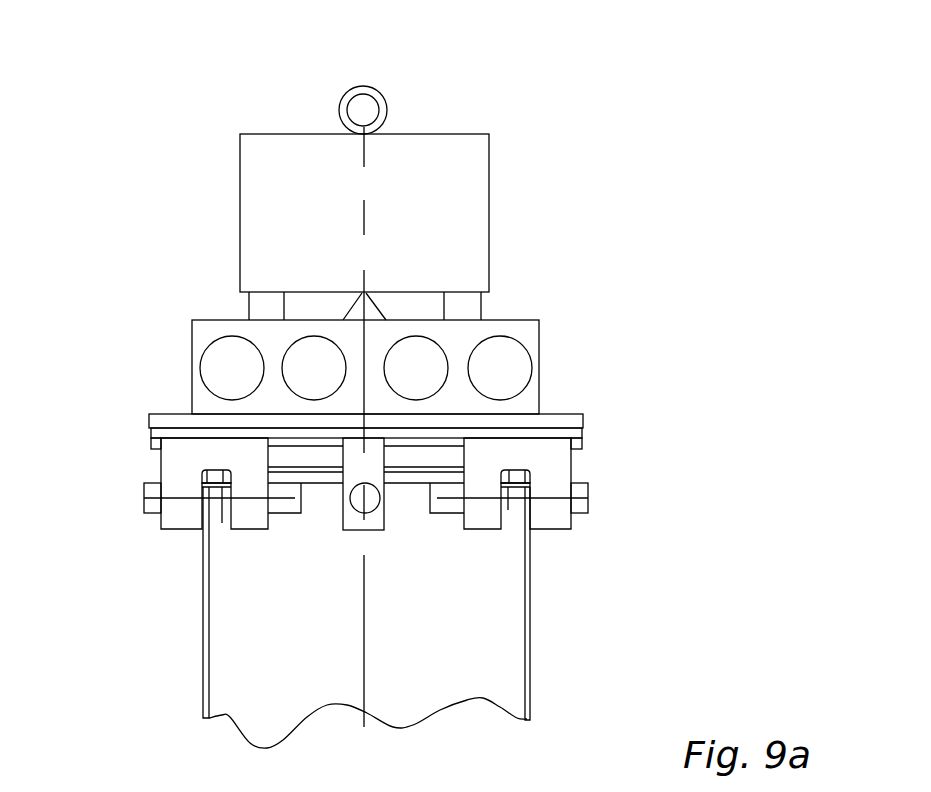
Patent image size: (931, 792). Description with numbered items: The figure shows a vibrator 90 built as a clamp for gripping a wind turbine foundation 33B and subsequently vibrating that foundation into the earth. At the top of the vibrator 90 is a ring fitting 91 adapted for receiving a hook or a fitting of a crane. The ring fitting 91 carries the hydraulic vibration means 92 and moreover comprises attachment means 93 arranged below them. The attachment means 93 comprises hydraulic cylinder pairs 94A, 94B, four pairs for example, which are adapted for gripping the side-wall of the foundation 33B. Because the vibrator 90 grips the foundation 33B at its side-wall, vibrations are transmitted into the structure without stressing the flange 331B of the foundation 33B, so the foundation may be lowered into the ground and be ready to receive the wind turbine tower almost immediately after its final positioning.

The vibrator 90 is at (442, 375).
The ring fitting 91 is at (383, 98).
The hydraulic vibration means 92 is at (622, 333).
The attachment means 93 is at (607, 467).
The hydraulic cylinder 94A is at (508, 510).
The hydraulic cylinder 94B is at (530, 543).
The flange 331B is at (222, 523).
The foundation 33B is at (530, 670).